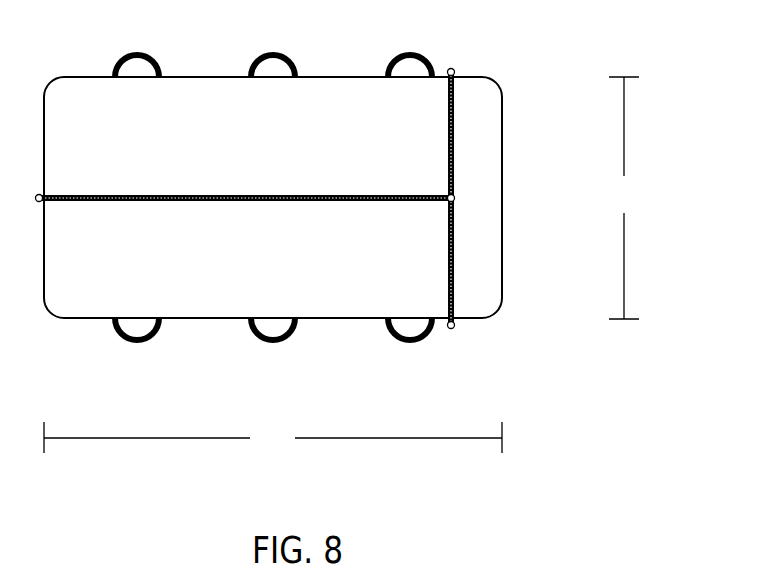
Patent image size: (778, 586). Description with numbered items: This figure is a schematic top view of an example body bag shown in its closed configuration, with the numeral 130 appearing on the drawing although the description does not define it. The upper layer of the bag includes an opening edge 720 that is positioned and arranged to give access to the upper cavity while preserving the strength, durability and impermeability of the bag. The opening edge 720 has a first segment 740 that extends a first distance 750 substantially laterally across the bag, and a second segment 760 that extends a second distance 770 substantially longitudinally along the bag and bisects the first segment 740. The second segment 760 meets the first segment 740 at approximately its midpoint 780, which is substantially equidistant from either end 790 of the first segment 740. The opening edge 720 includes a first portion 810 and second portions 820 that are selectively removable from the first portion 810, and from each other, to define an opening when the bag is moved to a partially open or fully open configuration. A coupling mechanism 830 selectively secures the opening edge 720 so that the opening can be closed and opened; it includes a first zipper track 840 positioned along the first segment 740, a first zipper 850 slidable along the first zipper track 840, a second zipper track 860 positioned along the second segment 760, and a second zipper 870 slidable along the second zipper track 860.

The cover 130 is at (482, 100).
The opening edge 720 is at (457, 151).
The first segment 740 is at (460, 237).
The first distance 750 is at (624, 198).
The second segment 760 is at (262, 210).
The second distance 770 is at (273, 437).
The midpoint 780 is at (458, 197).
The end 790 is at (452, 64).
The first portion 810 is at (472, 282).
The second portion 820 is at (342, 112).
The coupling mechanism 830 is at (205, 187).
The first zipper track 840 is at (457, 118).
The first zipper 850 is at (440, 96).
The second zipper track 860 is at (117, 192).
The second zipper 870 is at (447, 192).